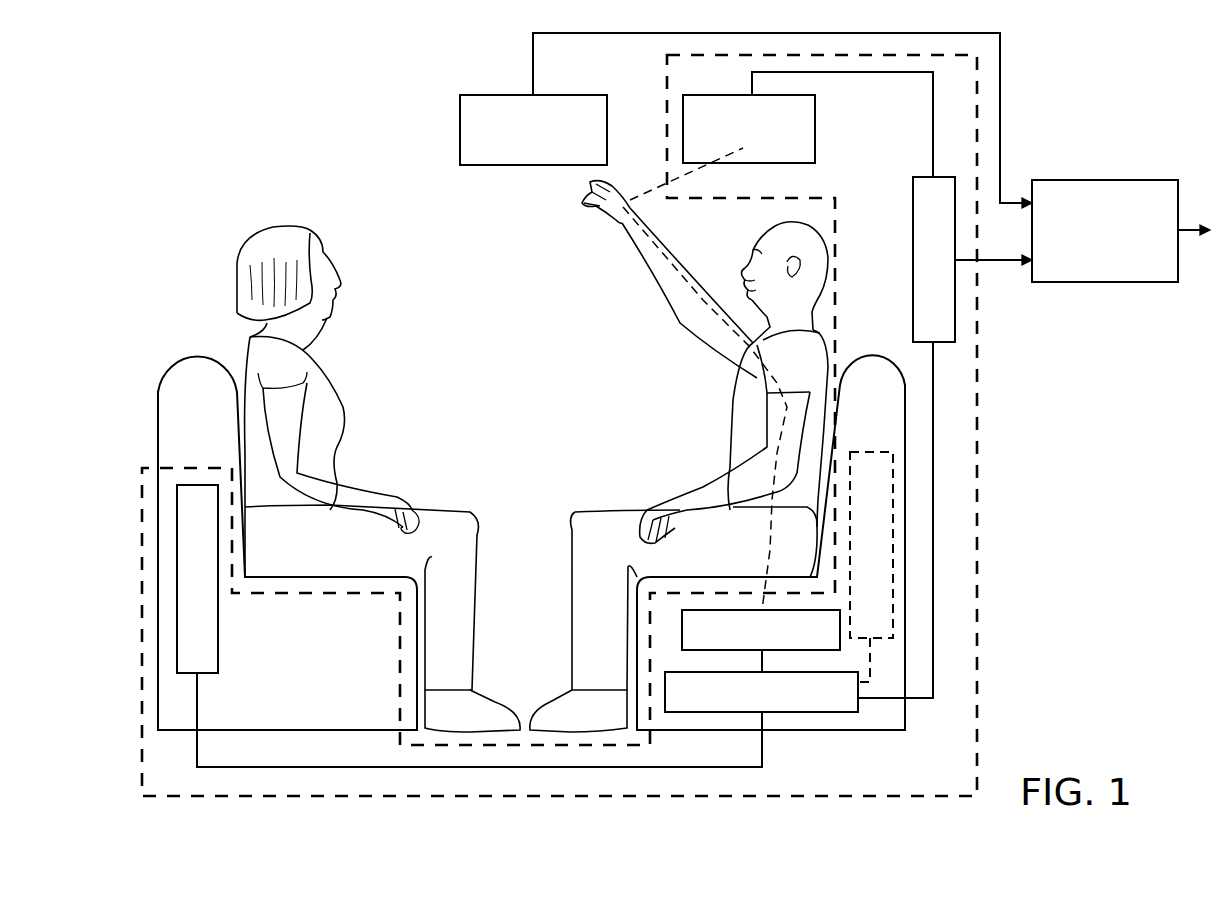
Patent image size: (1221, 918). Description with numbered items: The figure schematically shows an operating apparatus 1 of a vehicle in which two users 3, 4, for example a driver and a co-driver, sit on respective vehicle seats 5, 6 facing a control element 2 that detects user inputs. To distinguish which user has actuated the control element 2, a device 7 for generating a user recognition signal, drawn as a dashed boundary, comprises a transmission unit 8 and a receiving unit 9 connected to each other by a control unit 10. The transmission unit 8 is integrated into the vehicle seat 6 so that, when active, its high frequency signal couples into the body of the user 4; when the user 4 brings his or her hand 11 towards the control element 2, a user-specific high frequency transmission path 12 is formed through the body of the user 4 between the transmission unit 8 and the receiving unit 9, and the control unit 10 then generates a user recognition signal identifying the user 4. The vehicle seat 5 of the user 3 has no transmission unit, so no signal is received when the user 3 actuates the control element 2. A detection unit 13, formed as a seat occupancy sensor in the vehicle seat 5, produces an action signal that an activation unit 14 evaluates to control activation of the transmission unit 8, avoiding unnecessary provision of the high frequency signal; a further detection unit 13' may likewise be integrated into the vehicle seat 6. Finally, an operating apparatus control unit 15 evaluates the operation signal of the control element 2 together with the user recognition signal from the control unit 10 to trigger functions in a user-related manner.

The operating apparatus 1 is at (1065, 577).
The control element 2 is at (460, 130).
The user 3 is at (337, 442).
The user 4 is at (735, 438).
The vehicle seat 5 is at (195, 352).
The vehicle seat 6 is at (866, 352).
The device for generating a user recognition signal 7 is at (977, 412).
The transmission unit 8 is at (682, 630).
The receiving unit 9 is at (817, 128).
The control unit 10 is at (913, 228).
The hand 11 is at (612, 184).
The high frequency transmission path 12 is at (768, 558).
The detection unit 13 is at (227, 579).
The further detection unit 13' is at (871, 538).
The activation unit 14 is at (803, 712).
The operating apparatus control unit 15 is at (1103, 180).